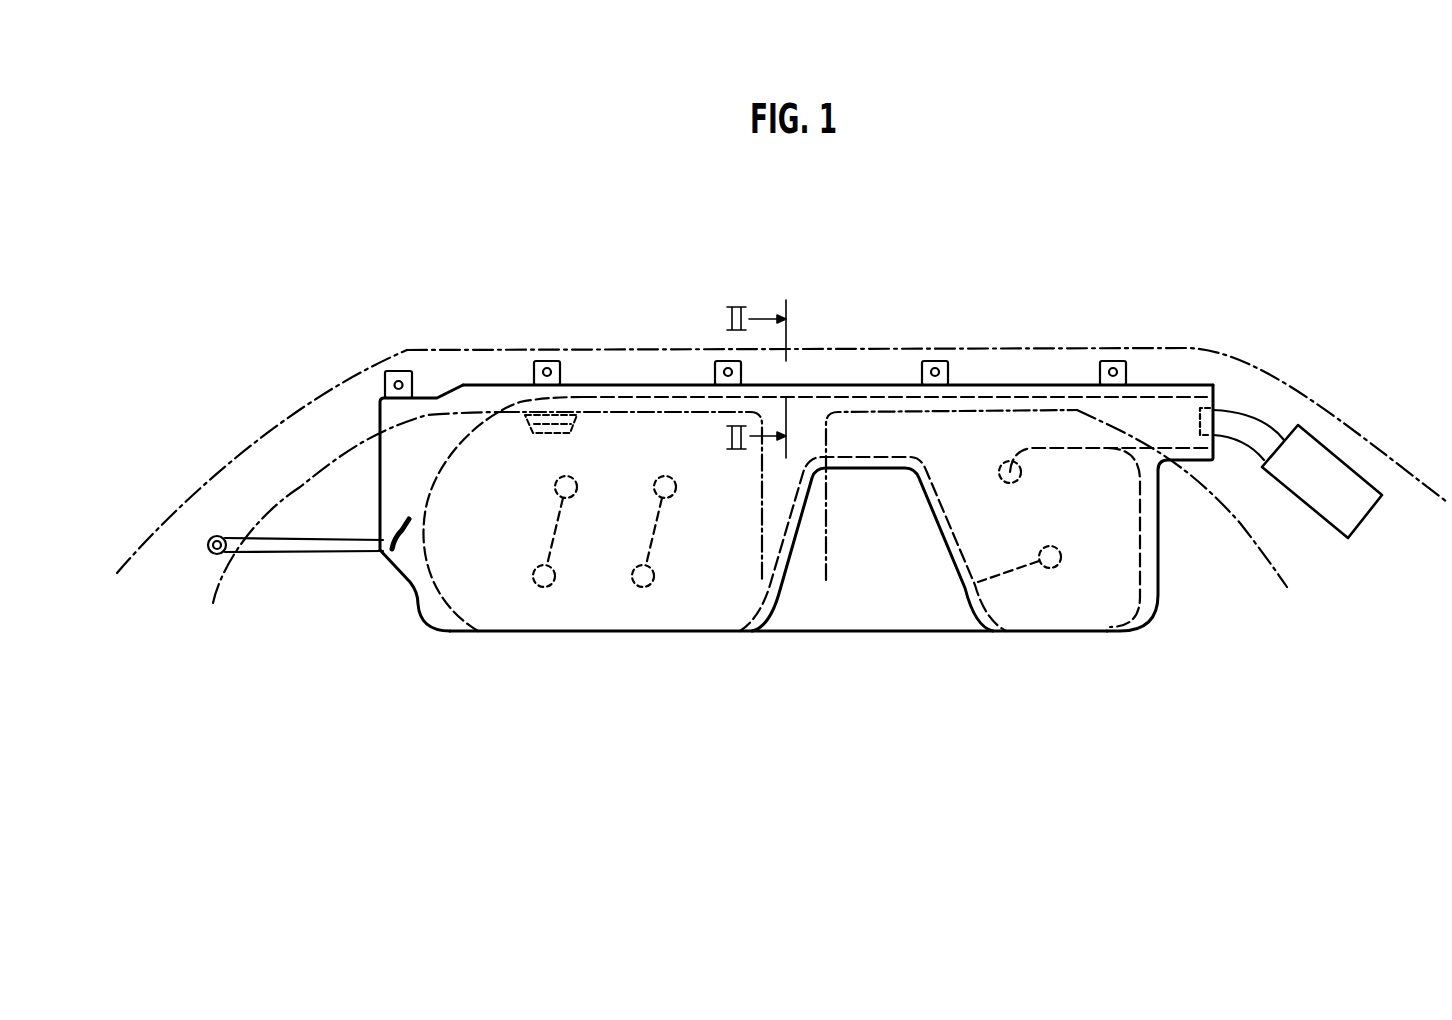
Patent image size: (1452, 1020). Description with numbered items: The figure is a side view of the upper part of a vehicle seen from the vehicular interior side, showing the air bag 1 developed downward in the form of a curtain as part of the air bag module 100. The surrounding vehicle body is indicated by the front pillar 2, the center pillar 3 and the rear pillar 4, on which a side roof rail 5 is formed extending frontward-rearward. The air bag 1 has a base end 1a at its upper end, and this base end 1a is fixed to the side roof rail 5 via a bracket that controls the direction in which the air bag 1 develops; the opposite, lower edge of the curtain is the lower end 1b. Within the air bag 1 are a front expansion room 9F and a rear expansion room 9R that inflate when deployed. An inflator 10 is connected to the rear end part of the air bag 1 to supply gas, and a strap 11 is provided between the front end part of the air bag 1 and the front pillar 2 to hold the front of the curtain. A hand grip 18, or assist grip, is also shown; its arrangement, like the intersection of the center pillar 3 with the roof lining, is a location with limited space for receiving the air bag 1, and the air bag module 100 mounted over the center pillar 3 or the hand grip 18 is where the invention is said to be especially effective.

The air bag module 100 is at (996, 256).
The air bag 1 is at (628, 378).
The base end 1a is at (1062, 383).
The lower edge of airbag 1b is at (843, 632).
The front pillar 2 is at (243, 466).
The center pillar 3 is at (825, 537).
The rear pillar 4 is at (1240, 524).
The side roof rail 5 is at (873, 363).
The front expansion room 9F is at (548, 613).
The rear expansion room 9R is at (1068, 615).
The inflator 10 is at (1325, 467).
The strap 11 is at (317, 550).
The hand grip 18 is at (517, 428).